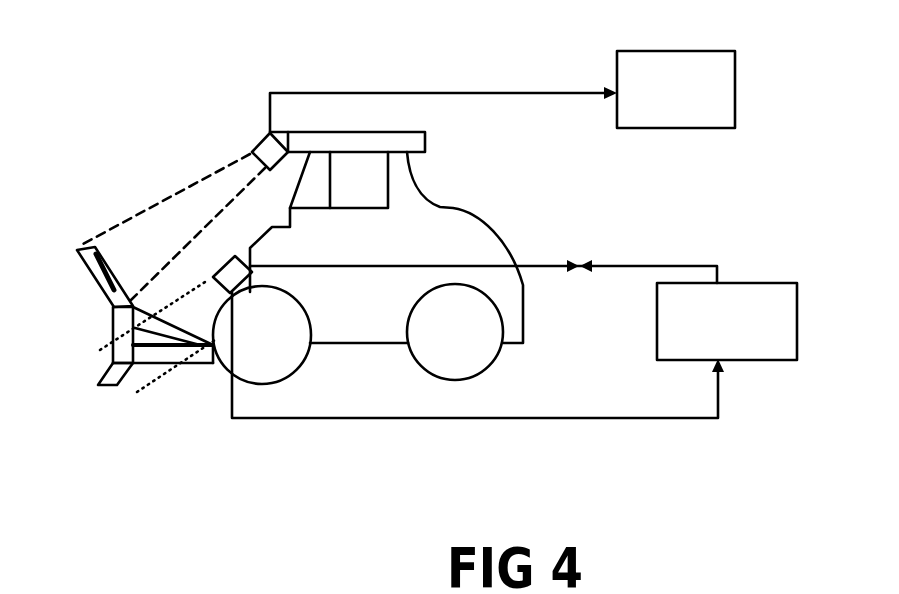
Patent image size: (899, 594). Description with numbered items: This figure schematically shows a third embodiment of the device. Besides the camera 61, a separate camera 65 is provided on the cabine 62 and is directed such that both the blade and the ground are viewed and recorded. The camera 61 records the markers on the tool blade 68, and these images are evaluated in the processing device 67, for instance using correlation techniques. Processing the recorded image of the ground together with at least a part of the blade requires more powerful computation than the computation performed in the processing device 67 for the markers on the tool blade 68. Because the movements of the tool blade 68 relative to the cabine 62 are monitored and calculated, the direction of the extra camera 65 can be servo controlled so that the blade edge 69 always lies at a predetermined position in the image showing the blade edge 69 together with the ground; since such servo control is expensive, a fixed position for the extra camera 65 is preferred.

The camera 61 is at (250, 151).
The cabine 62 is at (368, 131).
The separate camera 65 is at (212, 293).
The processing device 67 is at (735, 97).
The tool blade 68 is at (797, 322).
The blade edge 69 is at (95, 390).